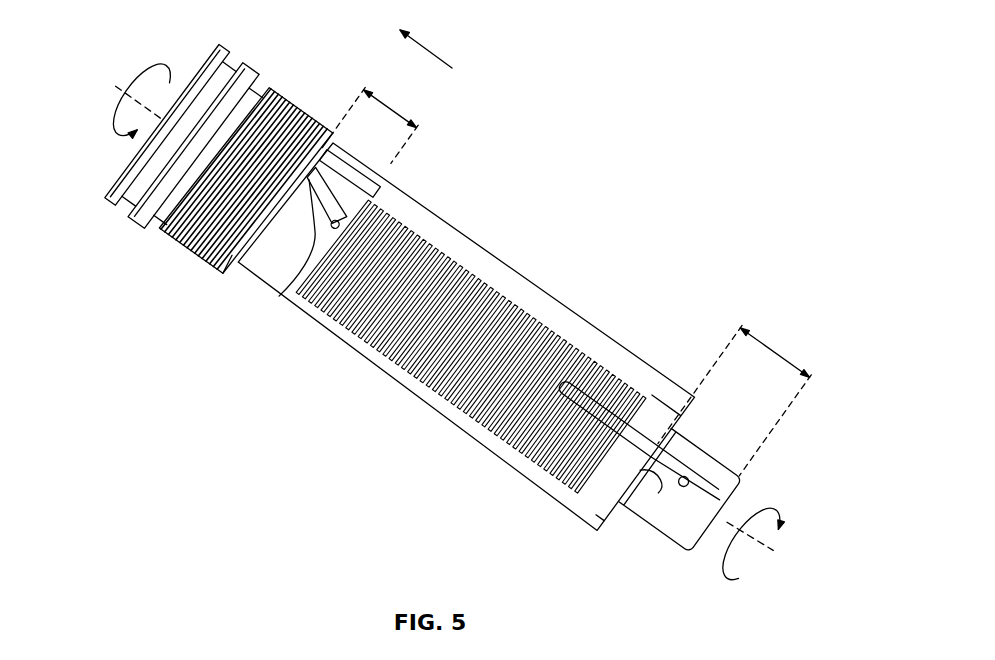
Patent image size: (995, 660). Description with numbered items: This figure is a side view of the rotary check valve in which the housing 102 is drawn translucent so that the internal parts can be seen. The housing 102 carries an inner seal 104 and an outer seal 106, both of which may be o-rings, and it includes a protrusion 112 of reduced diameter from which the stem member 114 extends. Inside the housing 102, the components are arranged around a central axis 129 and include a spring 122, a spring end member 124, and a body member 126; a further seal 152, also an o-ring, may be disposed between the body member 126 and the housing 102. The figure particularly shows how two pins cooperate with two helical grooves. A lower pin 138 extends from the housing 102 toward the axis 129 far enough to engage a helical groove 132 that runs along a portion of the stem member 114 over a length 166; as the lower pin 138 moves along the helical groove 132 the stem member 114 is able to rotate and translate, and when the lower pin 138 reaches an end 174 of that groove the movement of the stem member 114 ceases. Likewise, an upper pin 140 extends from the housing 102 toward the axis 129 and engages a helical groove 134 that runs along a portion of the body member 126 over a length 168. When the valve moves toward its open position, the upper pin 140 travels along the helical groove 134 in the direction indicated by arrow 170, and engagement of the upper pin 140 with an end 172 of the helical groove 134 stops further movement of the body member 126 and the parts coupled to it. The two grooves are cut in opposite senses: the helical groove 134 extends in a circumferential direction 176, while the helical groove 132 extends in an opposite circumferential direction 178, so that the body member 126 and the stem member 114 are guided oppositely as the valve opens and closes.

The housing 102 is at (577, 310).
The inner seal 104 is at (215, 62).
The outer seal 106 is at (243, 66).
The protrusion 112 is at (740, 473).
The stem member 114 is at (720, 480).
The spring 122 is at (467, 270).
The spring end member 124 is at (650, 393).
The body member 126 is at (286, 97).
The central axis 129 is at (770, 550).
The helical groove 132 is at (660, 478).
The helical groove 134 is at (267, 310).
The lower pin 138 is at (685, 478).
The upper pin 140 is at (378, 190).
The seal 152 is at (223, 273).
The length 166 is at (780, 353).
The length 168 is at (392, 101).
The arrow 170 is at (430, 44).
The end of helical groove 172 is at (336, 146).
The end of helical groove 174 is at (594, 533).
The circumferential direction 176 is at (120, 112).
The opposite circumferential direction 178 is at (737, 575).